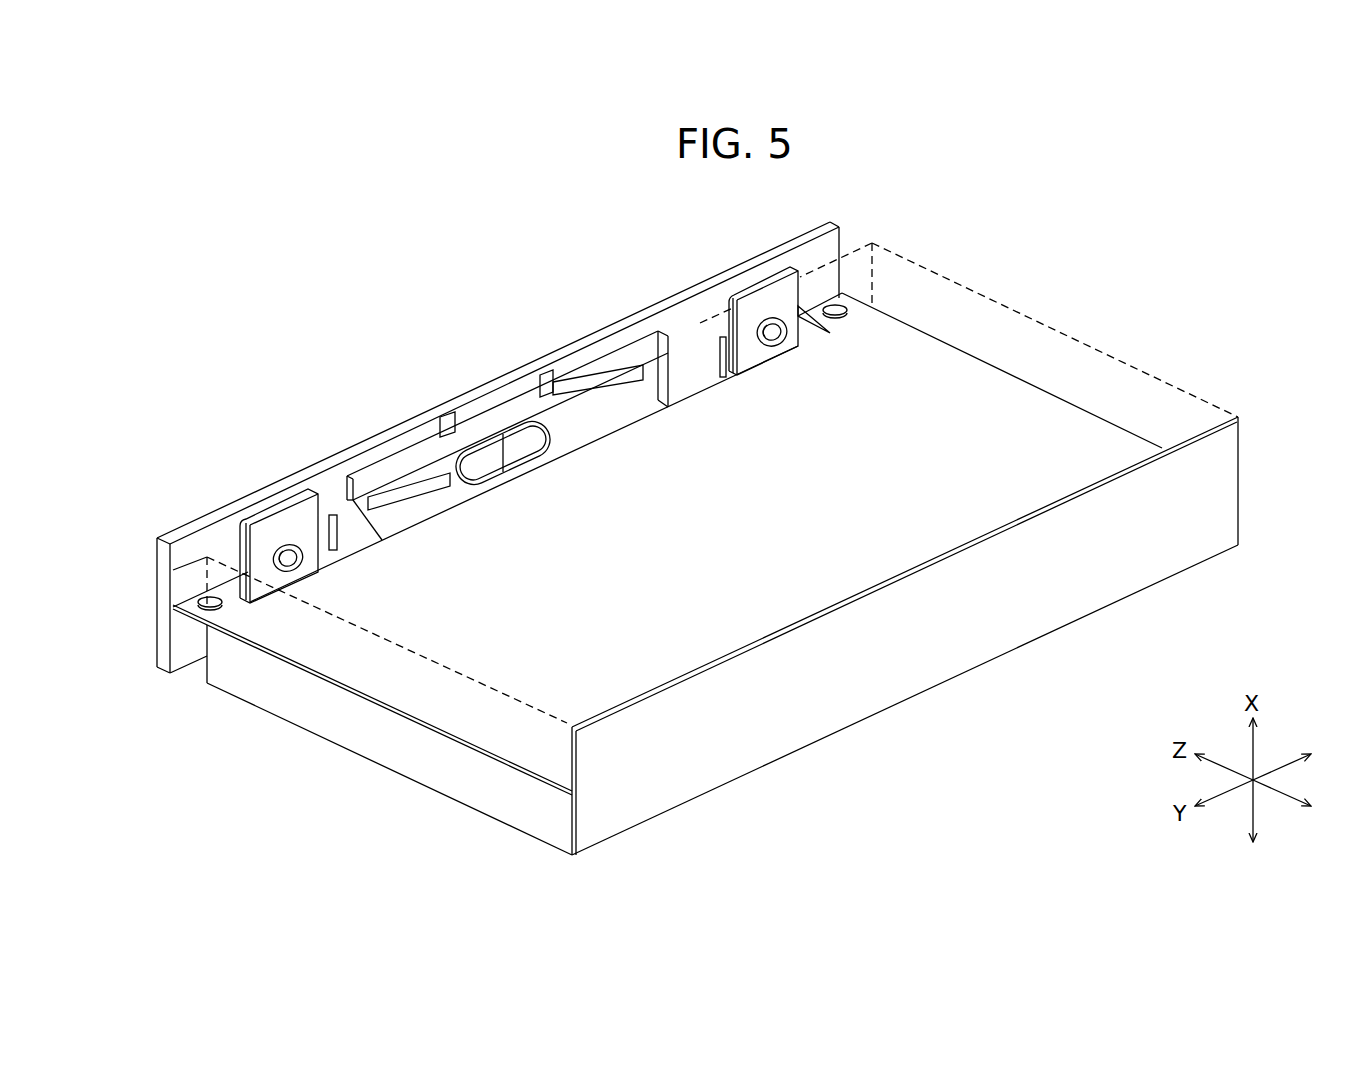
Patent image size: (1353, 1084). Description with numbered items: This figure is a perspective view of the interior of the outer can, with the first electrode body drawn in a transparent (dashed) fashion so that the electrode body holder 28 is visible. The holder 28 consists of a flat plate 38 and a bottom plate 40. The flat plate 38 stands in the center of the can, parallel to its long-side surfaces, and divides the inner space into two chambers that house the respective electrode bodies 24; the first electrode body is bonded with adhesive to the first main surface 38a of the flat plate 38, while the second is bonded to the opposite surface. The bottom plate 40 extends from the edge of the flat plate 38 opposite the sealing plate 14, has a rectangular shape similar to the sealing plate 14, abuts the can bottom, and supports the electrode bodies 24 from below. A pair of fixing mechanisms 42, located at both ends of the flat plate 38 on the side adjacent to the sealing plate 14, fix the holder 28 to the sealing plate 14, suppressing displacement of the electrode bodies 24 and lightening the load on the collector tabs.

The sealing plate 14 is at (521, 432).
The electrode body 24 is at (1012, 305).
The electrode body holder 28 is at (705, 560).
The flat plate 38 is at (315, 680).
The first main surface 38a is at (400, 680).
The bottom plate 40 is at (757, 737).
The fixing mechanism 42 is at (200, 605).